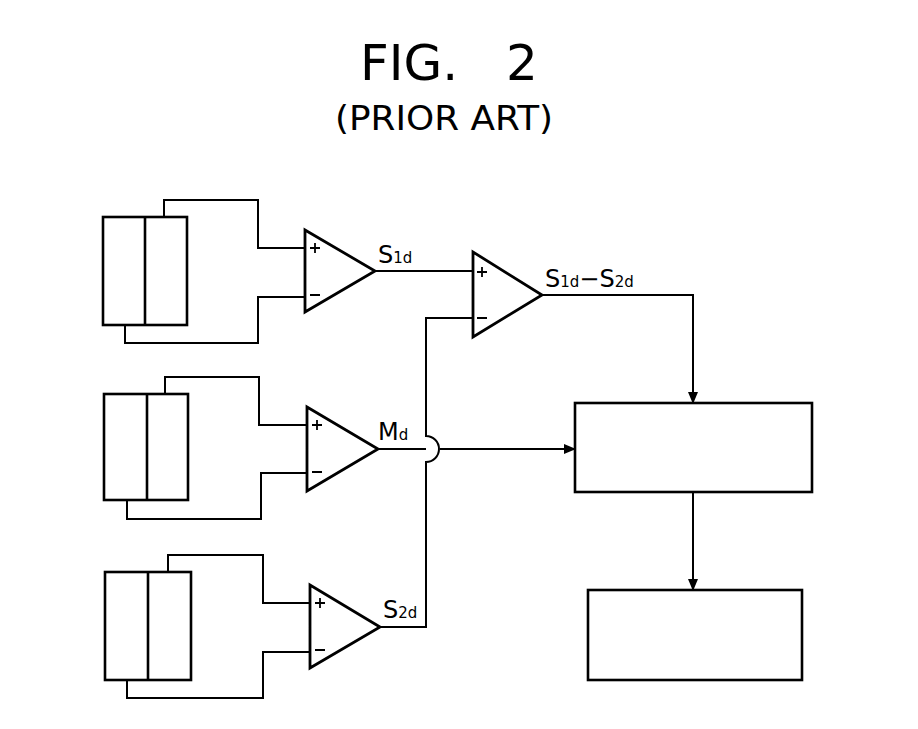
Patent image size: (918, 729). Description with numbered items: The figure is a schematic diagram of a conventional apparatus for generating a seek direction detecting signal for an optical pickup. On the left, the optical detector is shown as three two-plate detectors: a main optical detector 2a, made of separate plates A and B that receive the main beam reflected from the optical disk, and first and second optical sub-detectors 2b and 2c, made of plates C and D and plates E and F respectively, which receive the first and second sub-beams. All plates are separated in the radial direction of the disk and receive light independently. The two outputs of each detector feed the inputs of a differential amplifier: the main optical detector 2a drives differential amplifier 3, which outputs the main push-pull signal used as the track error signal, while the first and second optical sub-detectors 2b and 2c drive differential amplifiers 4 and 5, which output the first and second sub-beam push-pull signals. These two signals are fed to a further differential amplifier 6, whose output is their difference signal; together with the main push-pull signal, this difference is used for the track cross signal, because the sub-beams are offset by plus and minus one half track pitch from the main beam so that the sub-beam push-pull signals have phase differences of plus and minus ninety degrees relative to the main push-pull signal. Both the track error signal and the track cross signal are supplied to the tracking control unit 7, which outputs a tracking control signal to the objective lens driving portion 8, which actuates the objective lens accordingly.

The main optical detector 2a is at (104, 448).
The first optical sub-detector 2b is at (103, 270).
The second optical sub-detector 2c is at (105, 626).
The differential amplifier 3 is at (345, 425).
The differential amplifier 4 is at (342, 247).
The differential amplifier 5 is at (347, 602).
The differential amplifier 6 is at (508, 272).
The tracking control unit 7 is at (812, 450).
The objective lens driving portion 8 is at (802, 635).